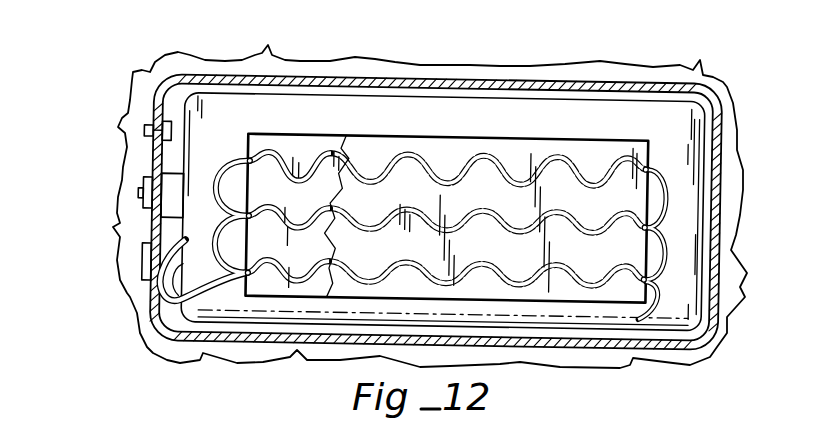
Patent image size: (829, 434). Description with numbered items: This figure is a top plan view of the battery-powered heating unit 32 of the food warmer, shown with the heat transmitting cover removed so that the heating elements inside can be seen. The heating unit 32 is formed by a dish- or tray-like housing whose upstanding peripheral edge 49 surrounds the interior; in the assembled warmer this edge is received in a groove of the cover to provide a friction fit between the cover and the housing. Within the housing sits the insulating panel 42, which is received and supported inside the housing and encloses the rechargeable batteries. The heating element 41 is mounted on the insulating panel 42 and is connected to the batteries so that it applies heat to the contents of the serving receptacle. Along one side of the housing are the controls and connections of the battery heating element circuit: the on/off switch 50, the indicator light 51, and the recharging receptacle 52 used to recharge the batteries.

The heating unit 32 is at (721, 84).
The upstanding peripheral edge 49 is at (640, 82).
The insulating panel 42 is at (283, 165).
The heating element 41 is at (317, 147).
The indicator light 51 is at (143, 130).
The on/off switch 50 is at (138, 194).
The recharging receptacle 52 is at (143, 263).